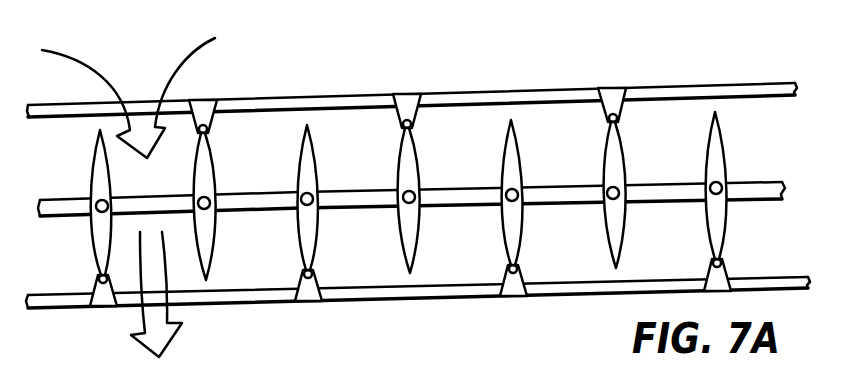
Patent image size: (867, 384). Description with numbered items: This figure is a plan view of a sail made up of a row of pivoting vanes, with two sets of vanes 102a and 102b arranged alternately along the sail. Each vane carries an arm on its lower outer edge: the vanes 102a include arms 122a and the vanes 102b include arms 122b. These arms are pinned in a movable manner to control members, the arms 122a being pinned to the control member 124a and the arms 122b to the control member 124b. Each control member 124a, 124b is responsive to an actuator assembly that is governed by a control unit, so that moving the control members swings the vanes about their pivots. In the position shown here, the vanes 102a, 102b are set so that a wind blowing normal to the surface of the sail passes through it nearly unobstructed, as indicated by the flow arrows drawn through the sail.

The vane 102a is at (90, 168).
The vane 102b is at (217, 164).
The arm 122a is at (317, 278).
The arm 122b is at (414, 112).
The control member 124a is at (222, 297).
The control member 124b is at (367, 95).